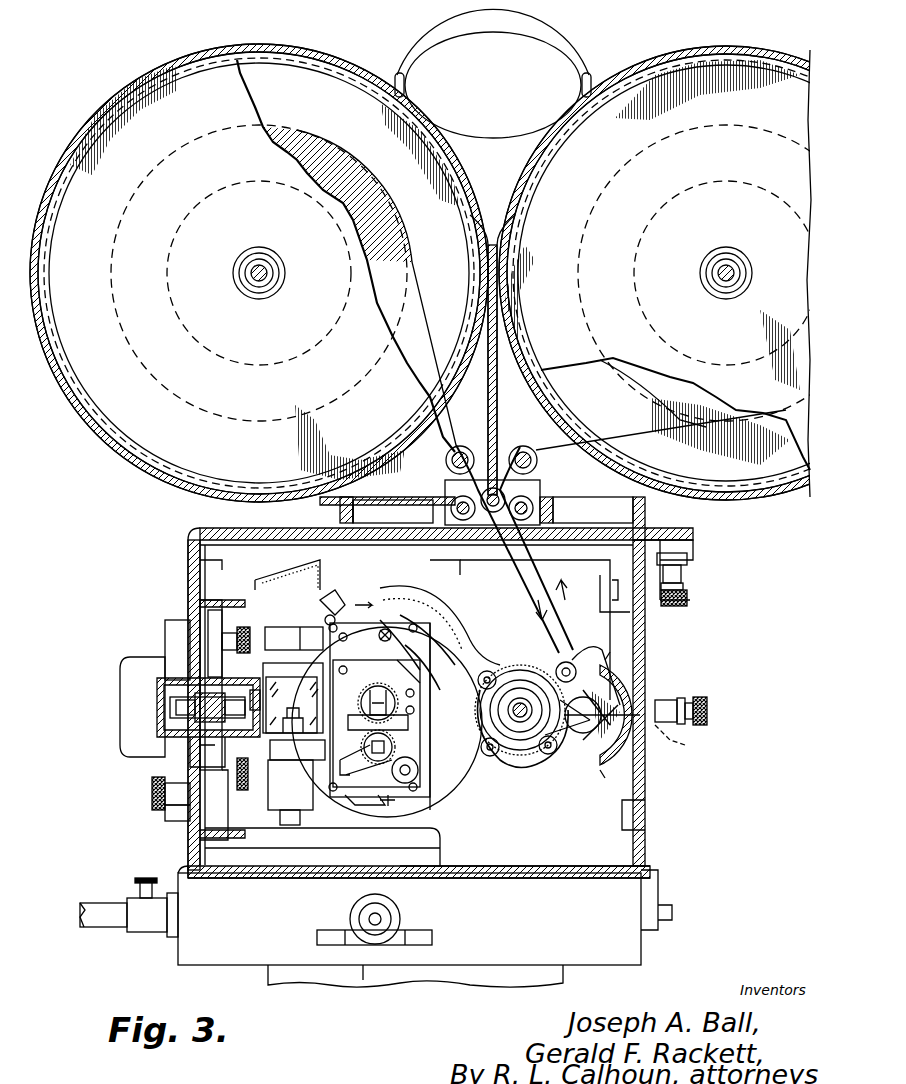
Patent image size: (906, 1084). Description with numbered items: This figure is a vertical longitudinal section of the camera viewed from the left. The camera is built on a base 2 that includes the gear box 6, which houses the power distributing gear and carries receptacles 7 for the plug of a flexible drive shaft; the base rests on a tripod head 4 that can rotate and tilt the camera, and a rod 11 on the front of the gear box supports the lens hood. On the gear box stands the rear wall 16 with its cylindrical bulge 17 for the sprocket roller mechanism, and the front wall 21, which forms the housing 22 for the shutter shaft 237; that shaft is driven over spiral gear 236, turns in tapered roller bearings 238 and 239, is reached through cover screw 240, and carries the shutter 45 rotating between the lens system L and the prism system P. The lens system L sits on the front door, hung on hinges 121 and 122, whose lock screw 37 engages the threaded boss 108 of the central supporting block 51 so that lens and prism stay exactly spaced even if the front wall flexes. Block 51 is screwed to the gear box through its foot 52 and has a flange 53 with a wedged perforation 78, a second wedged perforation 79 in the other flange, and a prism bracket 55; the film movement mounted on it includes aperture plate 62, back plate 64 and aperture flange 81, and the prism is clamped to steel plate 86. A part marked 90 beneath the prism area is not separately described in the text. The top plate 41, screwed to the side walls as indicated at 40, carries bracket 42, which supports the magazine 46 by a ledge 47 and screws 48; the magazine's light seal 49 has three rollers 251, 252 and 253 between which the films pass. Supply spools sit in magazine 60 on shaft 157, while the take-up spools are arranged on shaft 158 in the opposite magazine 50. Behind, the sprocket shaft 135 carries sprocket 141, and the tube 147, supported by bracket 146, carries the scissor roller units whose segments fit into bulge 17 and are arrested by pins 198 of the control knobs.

The magazine 60 is at (200, 98).
The take-up reel 50 is at (730, 98).
The magazine 46 is at (493, 252).
The shaft 157 is at (250, 285).
The shaft 158 is at (710, 285).
The roller 252 is at (470, 490).
The roller 251 is at (386, 510).
The ledge 47 is at (365, 511).
The roller 253 is at (556, 512).
The top plate 41 is at (190, 540).
The bracket 42 is at (385, 545).
The light seal 49 is at (495, 545).
The screws 40 is at (612, 580).
The screws 48 is at (690, 600).
The front wall 21 is at (190, 600).
The shutter 45 is at (262, 590).
The hinge 121 is at (165, 625).
The lens system L is at (125, 665).
The cover screw 240 is at (157, 695).
The shutter shaft 237 is at (165, 708).
The tapered roller bearing 238 is at (176, 712).
The tapered roller bearing 239 is at (195, 750).
The spiral gear 236 is at (237, 708).
The housing 22 is at (222, 748).
The lock 37 is at (152, 792).
The hinge 122 is at (175, 822).
The prism bracket 55 is at (258, 790).
The threaded boss 108 is at (258, 830).
The flange 53 is at (322, 590).
The aperture plate 62 is at (338, 645).
The wedged perforation 78 is at (397, 641).
The back plate 64 is at (350, 685).
The aperture flange 81 is at (470, 600).
The light dividing prism P is at (293, 698).
The steel plate 86 is at (305, 712).
The cylinder 90 is at (288, 762).
The wedged perforation 79 is at (360, 795).
The sprocket 141 is at (498, 690).
The sprocket shaft 135 is at (508, 712).
The tube 147 is at (592, 650).
The bracket 146 is at (592, 760).
The cylindrical bulge 17 is at (650, 668).
The pins 198 is at (680, 749).
The rear wall 16 is at (648, 806).
The central supporting block 51 is at (444, 832).
The foot 52 is at (444, 852).
The gear box 6 is at (552, 866).
The base 2 is at (605, 965).
The receptacles 7 is at (395, 908).
The tripod head 4 is at (522, 972).
The rod 11 is at (105, 915).